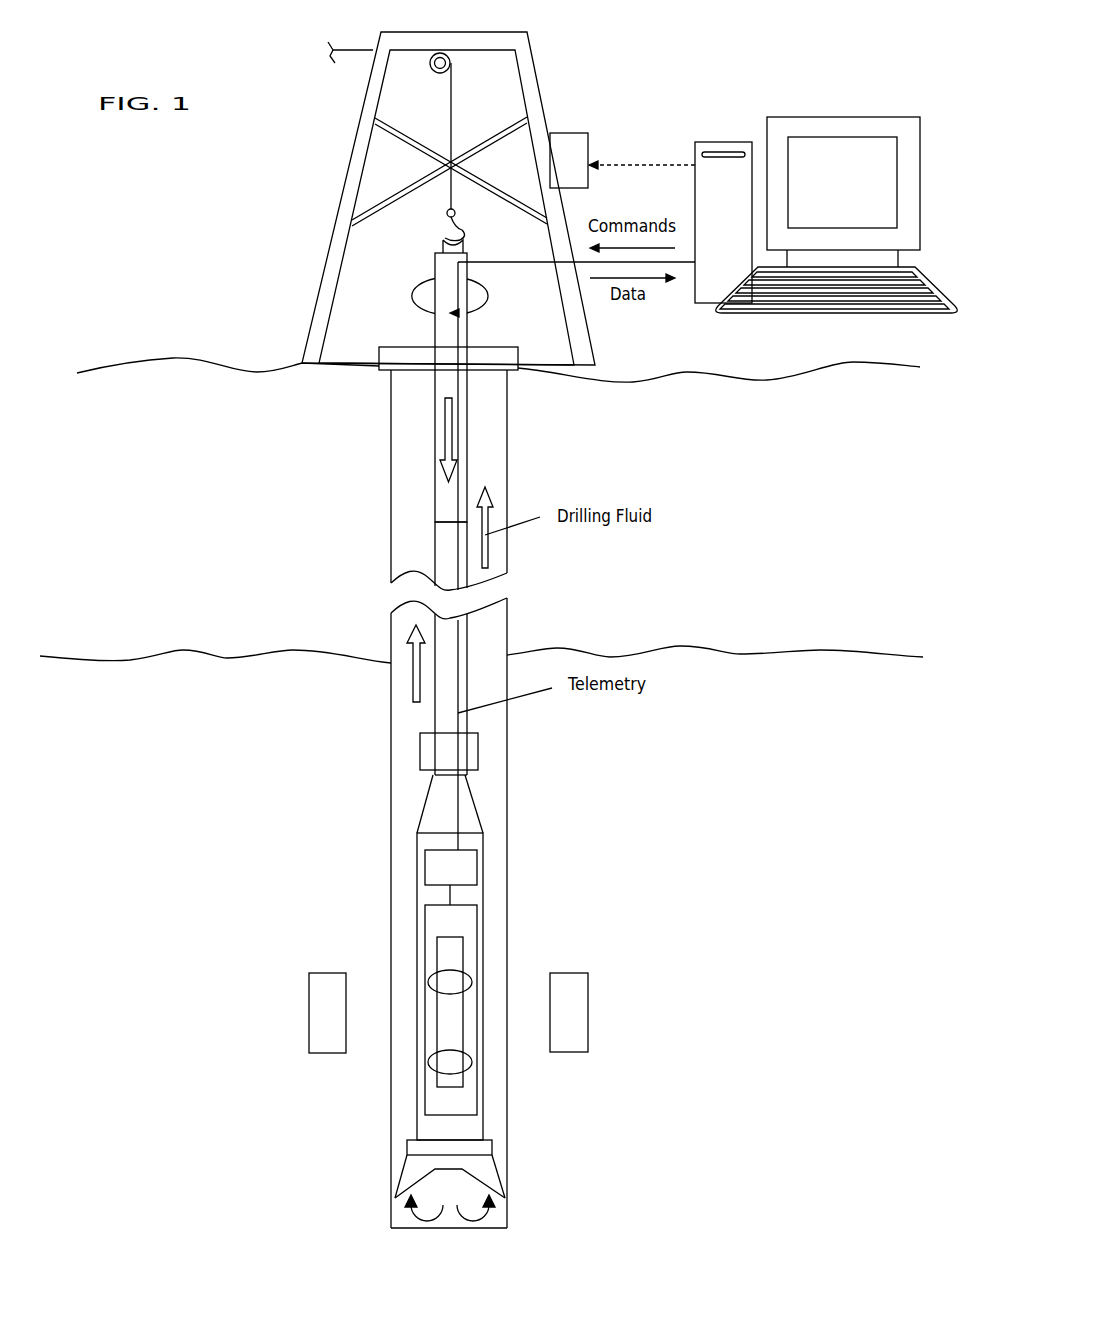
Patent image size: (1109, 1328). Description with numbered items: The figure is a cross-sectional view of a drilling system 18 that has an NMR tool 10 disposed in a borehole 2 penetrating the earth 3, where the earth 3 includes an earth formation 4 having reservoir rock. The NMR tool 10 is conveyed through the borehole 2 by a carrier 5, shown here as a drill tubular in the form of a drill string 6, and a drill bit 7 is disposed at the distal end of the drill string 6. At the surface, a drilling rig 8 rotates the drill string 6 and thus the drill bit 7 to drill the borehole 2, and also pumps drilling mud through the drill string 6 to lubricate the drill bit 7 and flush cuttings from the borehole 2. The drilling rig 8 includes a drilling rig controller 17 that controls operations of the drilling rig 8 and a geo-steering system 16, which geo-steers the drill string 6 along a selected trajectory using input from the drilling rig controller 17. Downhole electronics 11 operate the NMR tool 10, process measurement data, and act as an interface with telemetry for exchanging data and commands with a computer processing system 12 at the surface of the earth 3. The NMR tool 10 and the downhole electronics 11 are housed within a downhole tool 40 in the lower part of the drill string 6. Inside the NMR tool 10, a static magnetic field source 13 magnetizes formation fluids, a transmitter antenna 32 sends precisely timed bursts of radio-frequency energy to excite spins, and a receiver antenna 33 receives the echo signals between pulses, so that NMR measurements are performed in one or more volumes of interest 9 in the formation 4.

The drilling system 18 is at (234, 216).
The drilling rig 8 is at (302, 296).
The drilling rig controller 17 is at (572, 133).
The computer processing system 12 is at (748, 95).
The earth 3 is at (212, 448).
The borehole 2 is at (403, 541).
The carrier 5 is at (432, 494).
The earth formation 4 is at (206, 711).
The drill string 6 is at (437, 722).
The geo-steering system 16 is at (475, 757).
The downhole tool 40 is at (480, 823).
The downhole electronics 11 is at (442, 872).
The NMR tool 10 is at (427, 928).
The static magnetic field source 13 is at (450, 952).
The transmitter antenna 32 is at (472, 985).
The receiver antenna 33 is at (472, 1065).
The volume of interest 9 is at (578, 1007).
The drill bit 7 is at (413, 1175).